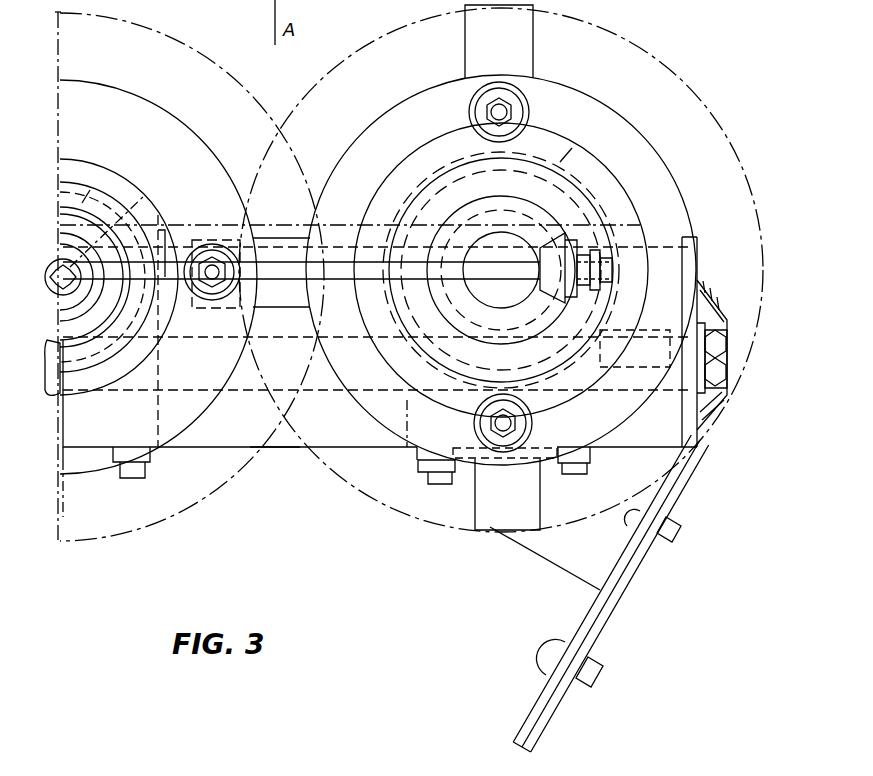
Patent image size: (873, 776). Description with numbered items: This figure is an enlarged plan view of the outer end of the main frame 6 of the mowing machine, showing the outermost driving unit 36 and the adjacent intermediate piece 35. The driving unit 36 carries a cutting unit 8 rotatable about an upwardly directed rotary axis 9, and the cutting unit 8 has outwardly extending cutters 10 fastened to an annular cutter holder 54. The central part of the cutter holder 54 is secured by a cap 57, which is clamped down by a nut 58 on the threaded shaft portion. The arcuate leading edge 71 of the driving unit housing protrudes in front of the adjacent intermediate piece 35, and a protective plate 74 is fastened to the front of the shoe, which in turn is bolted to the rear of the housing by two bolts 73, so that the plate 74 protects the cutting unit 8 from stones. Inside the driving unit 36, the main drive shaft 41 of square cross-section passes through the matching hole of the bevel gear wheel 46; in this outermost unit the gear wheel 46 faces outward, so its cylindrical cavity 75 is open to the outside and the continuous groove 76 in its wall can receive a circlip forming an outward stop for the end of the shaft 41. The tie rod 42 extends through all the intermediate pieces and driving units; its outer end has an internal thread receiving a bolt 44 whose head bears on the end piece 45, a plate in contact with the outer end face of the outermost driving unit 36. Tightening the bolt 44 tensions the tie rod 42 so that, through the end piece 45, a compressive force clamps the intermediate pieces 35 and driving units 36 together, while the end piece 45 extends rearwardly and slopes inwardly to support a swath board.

The main frame 6 is at (261, 462).
The cutting unit 8 is at (305, 91).
The rotary axis 9 is at (80, 297).
The cutter 10 is at (530, 42).
The intermediate piece 35 is at (272, 450).
The driving unit 36 is at (162, 454).
The main drive shaft 41 is at (125, 295).
The tie rod 42 is at (457, 233).
The bolt 44 is at (712, 343).
The end piece 45 is at (697, 446).
The bevel gear wheel 46 is at (541, 216).
The cutter holder 54 is at (95, 386).
The cap 57 is at (73, 340).
The nut 58 is at (77, 263).
The leading edge 71 is at (108, 188).
The bolt 73 is at (140, 476).
The protective plate 74 is at (218, 172).
The cylindrical cavity 75 is at (612, 272).
The continuous groove 76 is at (612, 290).